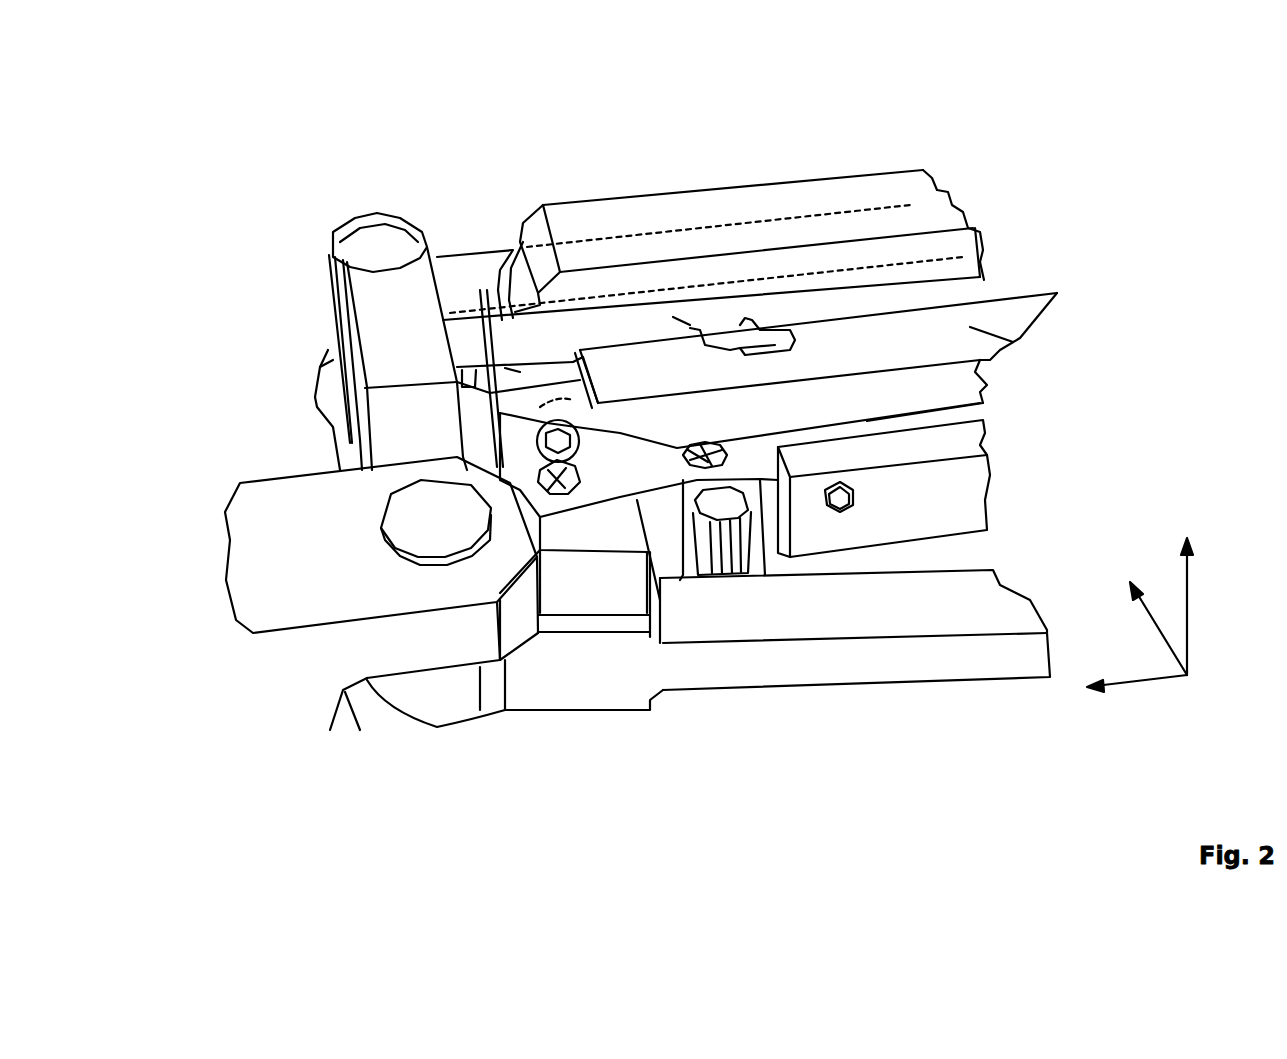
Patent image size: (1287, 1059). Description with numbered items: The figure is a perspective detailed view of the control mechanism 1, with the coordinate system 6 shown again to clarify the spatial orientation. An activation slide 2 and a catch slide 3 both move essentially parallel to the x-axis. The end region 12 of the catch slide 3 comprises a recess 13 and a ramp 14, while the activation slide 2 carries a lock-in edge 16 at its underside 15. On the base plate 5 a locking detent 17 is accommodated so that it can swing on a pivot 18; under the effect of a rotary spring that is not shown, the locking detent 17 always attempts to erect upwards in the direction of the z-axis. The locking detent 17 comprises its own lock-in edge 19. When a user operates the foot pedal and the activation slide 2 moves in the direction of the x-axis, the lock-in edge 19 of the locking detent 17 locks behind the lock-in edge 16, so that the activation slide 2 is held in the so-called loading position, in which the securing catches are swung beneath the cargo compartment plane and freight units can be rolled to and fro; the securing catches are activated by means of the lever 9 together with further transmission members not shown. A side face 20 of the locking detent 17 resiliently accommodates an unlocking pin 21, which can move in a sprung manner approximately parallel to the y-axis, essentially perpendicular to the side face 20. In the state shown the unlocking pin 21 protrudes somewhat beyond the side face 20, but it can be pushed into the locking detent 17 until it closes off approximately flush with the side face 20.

The holding device 1 is at (731, 60).
The activation slide 2 is at (573, 217).
The catch slide 3 is at (1018, 340).
The base plate 5 is at (855, 612).
The coordinate system 6 is at (1187, 675).
The lever 9 is at (363, 307).
The end region 12 is at (713, 310).
The recess 13 is at (750, 348).
The ramp 14 is at (623, 437).
The underside 15 is at (509, 369).
The lock-in edge 16 is at (673, 317).
The locking detent 17 is at (550, 390).
The pivot 18 is at (838, 507).
The lock-in edge 19 is at (463, 367).
The side face 20 is at (740, 508).
The unlocking pin 21 is at (558, 441).